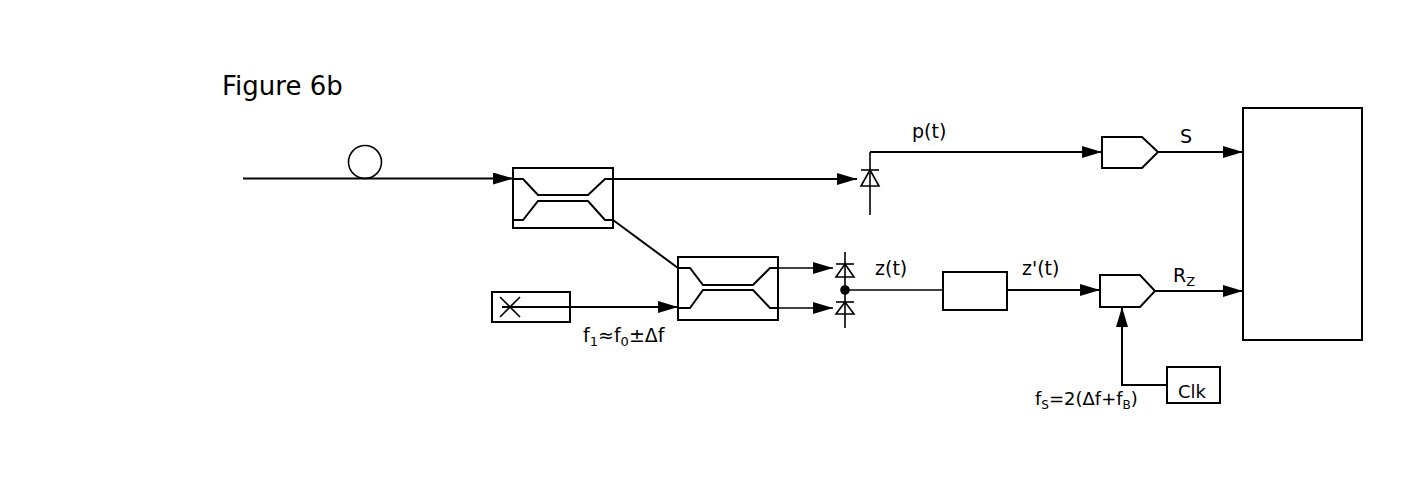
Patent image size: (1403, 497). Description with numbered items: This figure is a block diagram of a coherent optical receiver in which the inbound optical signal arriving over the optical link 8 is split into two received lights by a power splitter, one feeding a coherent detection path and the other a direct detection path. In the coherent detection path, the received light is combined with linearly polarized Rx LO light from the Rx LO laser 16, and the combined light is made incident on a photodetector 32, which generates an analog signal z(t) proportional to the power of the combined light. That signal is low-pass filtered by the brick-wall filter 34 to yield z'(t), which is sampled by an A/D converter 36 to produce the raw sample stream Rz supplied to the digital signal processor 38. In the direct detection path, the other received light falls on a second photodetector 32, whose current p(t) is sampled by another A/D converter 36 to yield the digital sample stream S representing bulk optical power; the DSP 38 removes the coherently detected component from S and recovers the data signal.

The optical link 8 is at (322, 180).
The Rx LO laser 16 is at (532, 292).
The photodetector 32 is at (882, 190).
The brick-wall filter 34 is at (974, 310).
The A/D converter 36 is at (1123, 137).
The digital signal processor 38 is at (1312, 184).